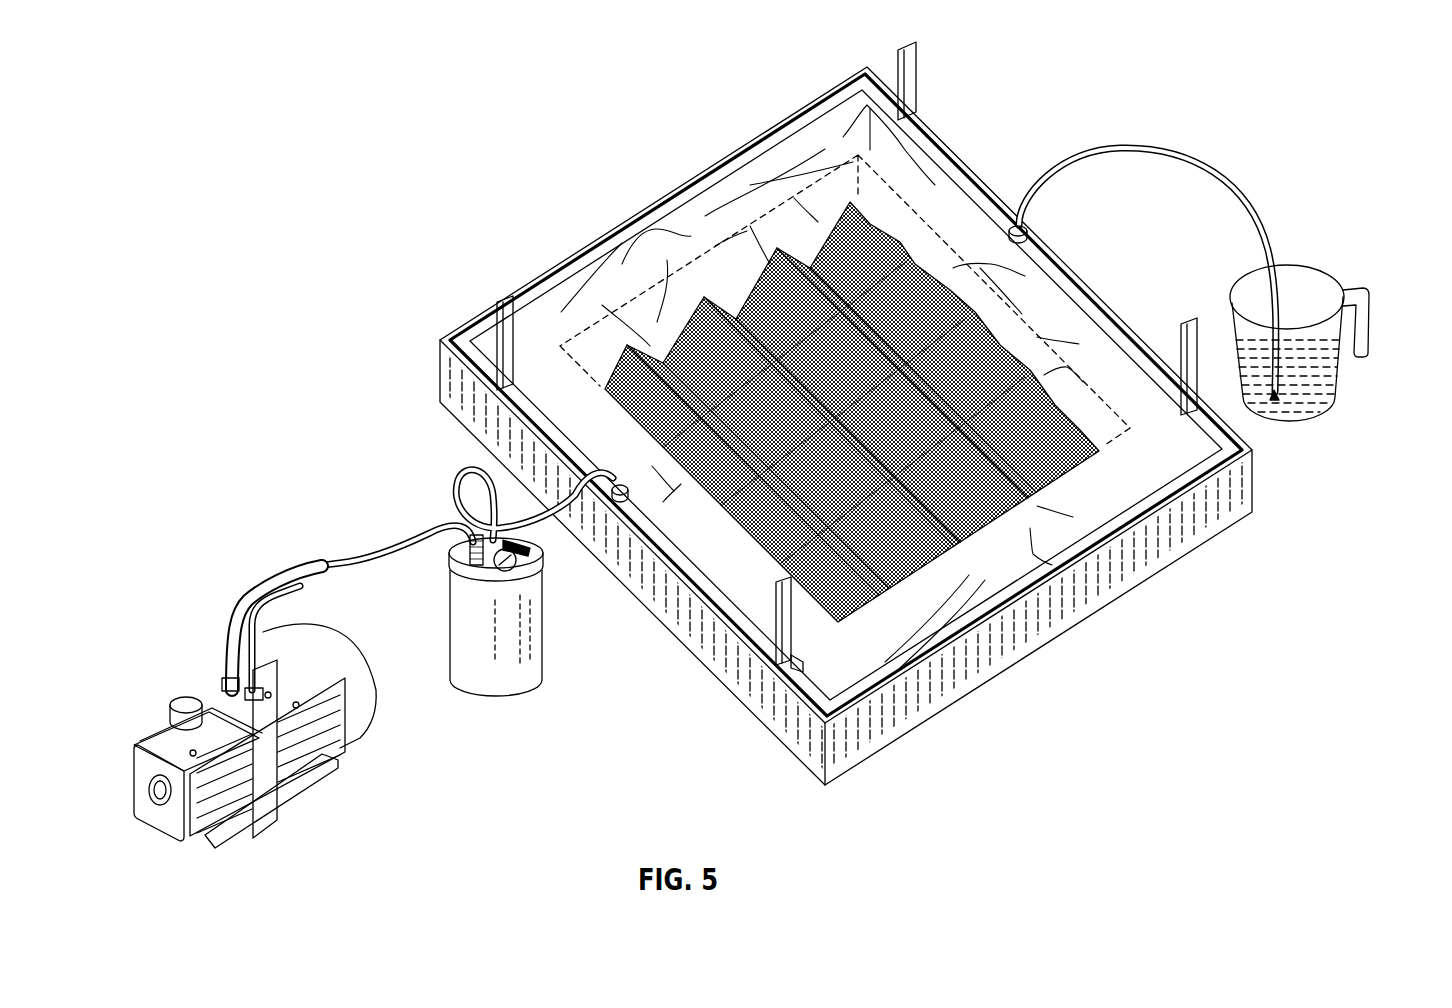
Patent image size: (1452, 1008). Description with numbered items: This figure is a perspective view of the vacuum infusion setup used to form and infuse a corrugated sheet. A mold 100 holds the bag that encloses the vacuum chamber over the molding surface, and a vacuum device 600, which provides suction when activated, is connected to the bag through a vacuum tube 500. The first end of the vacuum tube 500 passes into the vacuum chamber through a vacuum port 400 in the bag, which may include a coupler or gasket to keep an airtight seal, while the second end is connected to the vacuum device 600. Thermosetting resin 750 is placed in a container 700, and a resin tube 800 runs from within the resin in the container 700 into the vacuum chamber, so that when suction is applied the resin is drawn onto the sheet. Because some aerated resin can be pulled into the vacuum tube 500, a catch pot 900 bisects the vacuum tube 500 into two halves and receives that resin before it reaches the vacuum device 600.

The mold 100 is at (447, 385).
The vacuum port 400 is at (628, 505).
The vacuum tube 500 is at (367, 566).
The vacuum device 600 is at (140, 742).
The container 700 is at (1335, 343).
The thermosetting resin 750 is at (1322, 380).
The resin tube 800 is at (1173, 285).
The catch pot 900 is at (540, 672).